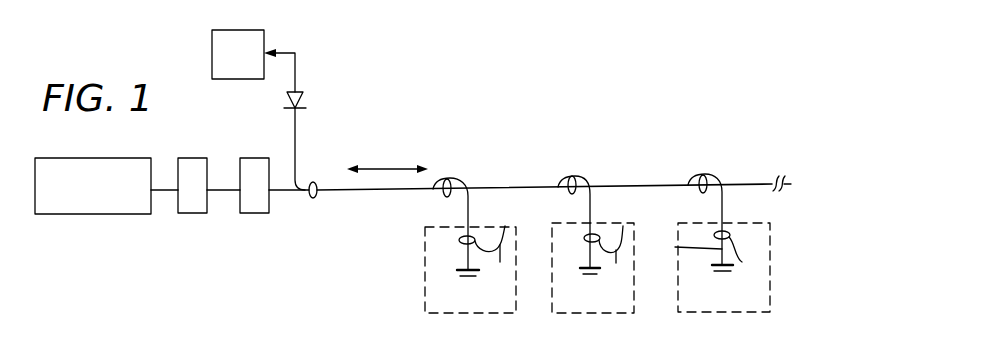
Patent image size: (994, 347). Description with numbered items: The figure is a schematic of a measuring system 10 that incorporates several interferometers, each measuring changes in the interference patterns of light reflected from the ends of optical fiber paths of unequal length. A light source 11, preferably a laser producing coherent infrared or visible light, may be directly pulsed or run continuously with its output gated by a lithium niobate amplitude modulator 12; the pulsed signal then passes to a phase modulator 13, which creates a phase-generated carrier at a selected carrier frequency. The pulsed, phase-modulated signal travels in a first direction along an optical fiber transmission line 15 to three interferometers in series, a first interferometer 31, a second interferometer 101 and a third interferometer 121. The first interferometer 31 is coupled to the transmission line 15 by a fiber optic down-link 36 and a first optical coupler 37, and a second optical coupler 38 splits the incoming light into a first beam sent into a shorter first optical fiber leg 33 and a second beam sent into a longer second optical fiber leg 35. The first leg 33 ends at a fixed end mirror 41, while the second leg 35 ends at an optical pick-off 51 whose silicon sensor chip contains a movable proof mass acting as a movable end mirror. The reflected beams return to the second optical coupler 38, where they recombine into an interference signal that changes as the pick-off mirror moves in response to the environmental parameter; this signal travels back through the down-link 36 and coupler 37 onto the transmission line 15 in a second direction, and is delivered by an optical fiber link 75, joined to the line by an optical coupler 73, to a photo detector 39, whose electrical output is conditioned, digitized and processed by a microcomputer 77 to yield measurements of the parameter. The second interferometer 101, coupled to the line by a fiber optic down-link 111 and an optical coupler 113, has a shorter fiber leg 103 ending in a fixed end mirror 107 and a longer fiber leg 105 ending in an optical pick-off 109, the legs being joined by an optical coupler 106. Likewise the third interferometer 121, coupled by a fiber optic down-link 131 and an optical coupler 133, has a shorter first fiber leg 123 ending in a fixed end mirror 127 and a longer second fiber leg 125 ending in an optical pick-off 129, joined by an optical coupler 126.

The measuring system 10 is at (514, 80).
The light source 11 is at (100, 158).
The lithium niobate amplitude modulator 12 is at (205, 158).
The phase modulator 13 is at (257, 213).
The optical fiber transmission line 15 is at (357, 189).
The first interferometer 31 is at (770, 223).
The first optical fiber leg 33 is at (740, 264).
The second optical fiber leg 35 is at (675, 247).
The fiber optic down-link 36 is at (723, 194).
The first optical coupler 37 is at (704, 175).
The second optical coupler 38 is at (728, 231).
The photo detector 39 is at (303, 100).
The fixed end mirror 41 is at (746, 257).
The optical pick-off 51 is at (725, 273).
The optical coupler 73 is at (313, 198).
The optical fiber link 75 is at (296, 128).
The microcomputer 77 is at (250, 64).
The second interferometer 101 is at (424, 270).
The fiber leg 103 is at (476, 245).
The fiber leg 105 is at (468, 253).
The optical coupler 106 is at (459, 240).
The fixed end mirror 107 is at (505, 228).
The optical pick-off 109 is at (468, 277).
The fiber optic down-link 111 is at (465, 212).
The optical coupler 113 is at (447, 179).
The third interferometer 121 is at (551, 292).
The first fiber leg 123 is at (599, 244).
The second fiber leg 125 is at (590, 257).
The optical coupler 126 is at (584, 239).
The fixed end mirror 127 is at (623, 227).
The optical pick-off 129 is at (590, 276).
The fiber optic down-link 131 is at (588, 208).
The optical coupler 133 is at (572, 176).